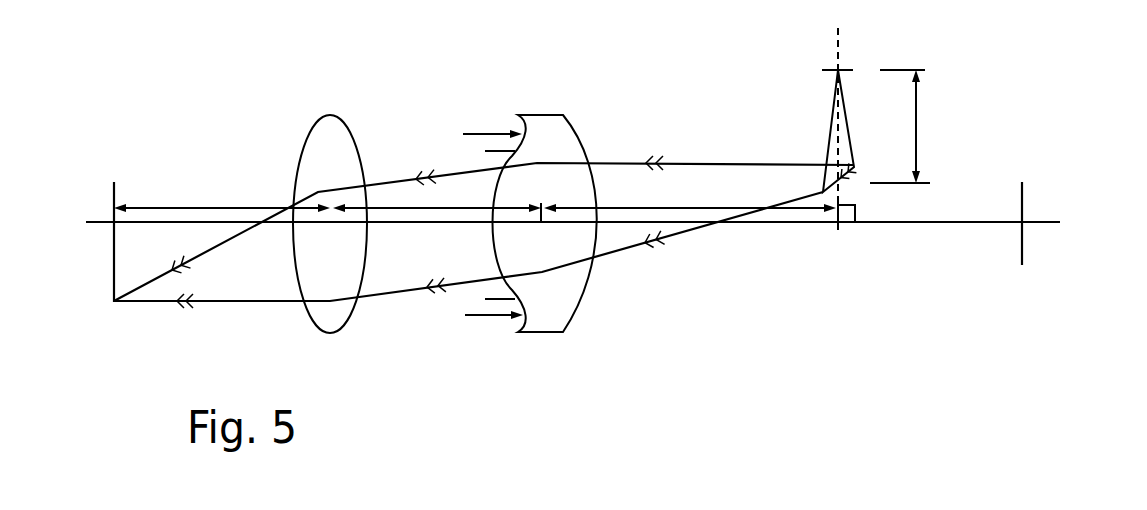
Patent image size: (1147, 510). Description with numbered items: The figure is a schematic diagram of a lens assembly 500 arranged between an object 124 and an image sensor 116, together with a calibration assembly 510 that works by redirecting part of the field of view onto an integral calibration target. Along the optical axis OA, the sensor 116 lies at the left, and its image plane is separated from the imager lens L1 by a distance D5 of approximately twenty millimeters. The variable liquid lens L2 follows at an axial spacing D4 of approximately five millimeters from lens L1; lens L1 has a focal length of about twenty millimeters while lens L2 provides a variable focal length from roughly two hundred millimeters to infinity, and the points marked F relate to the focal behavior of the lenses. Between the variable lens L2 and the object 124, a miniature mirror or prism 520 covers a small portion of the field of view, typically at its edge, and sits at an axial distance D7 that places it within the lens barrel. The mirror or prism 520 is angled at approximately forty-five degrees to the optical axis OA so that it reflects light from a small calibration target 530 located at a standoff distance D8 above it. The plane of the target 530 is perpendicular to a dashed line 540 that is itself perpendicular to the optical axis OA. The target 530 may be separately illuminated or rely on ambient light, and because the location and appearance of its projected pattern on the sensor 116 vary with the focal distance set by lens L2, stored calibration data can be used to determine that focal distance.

The sensor 116 is at (113, 190).
The object 124 is at (1024, 190).
The lens assembly 500 is at (963, 89).
The calibration assembly 510 is at (804, 102).
The mirror or prism 520 is at (855, 168).
The calibration target 530 is at (836, 69).
The dashed line 540 is at (843, 58).
The imager lens L1 is at (336, 110).
The variable lens L2 is at (552, 110).
The focal point F is at (478, 131).
The optical axis OA is at (978, 225).
The axial spacing D4 is at (377, 207).
The distance D5 is at (207, 207).
The axial distance D7 is at (790, 232).
The standoff distance D8 is at (917, 117).